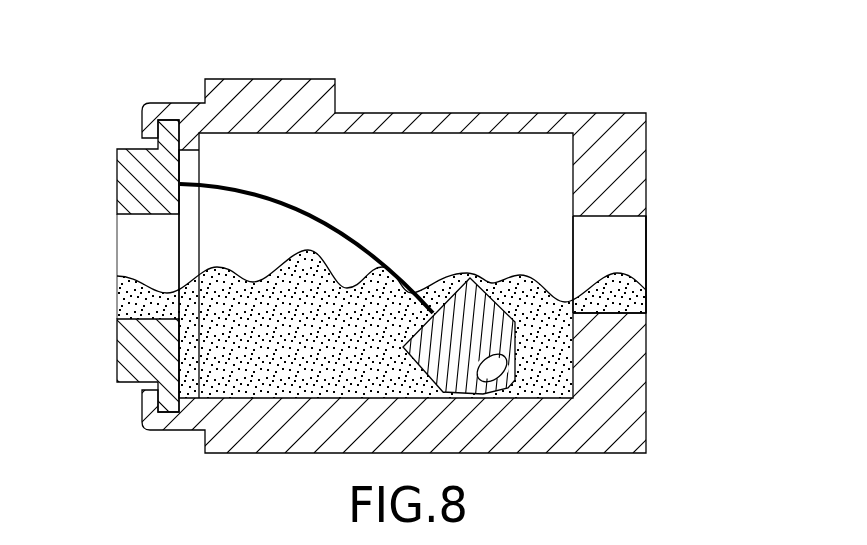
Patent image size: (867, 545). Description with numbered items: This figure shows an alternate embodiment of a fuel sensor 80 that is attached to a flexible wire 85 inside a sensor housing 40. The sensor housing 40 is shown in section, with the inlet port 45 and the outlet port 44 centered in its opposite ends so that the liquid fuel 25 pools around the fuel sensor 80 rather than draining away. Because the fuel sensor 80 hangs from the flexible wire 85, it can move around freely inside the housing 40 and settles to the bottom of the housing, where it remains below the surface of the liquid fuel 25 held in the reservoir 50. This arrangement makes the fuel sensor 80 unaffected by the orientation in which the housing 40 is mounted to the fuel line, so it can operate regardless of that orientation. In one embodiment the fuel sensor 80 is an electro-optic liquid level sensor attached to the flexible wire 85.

The sensor housing 40 is at (573, 112).
The outlet port 44 is at (637, 242).
The inlet port 45 is at (127, 228).
The liquid fuel 25 is at (117, 268).
The fuel sensor 80 is at (458, 302).
The flexible wire 85 is at (343, 222).
The reservoir 50 is at (557, 362).